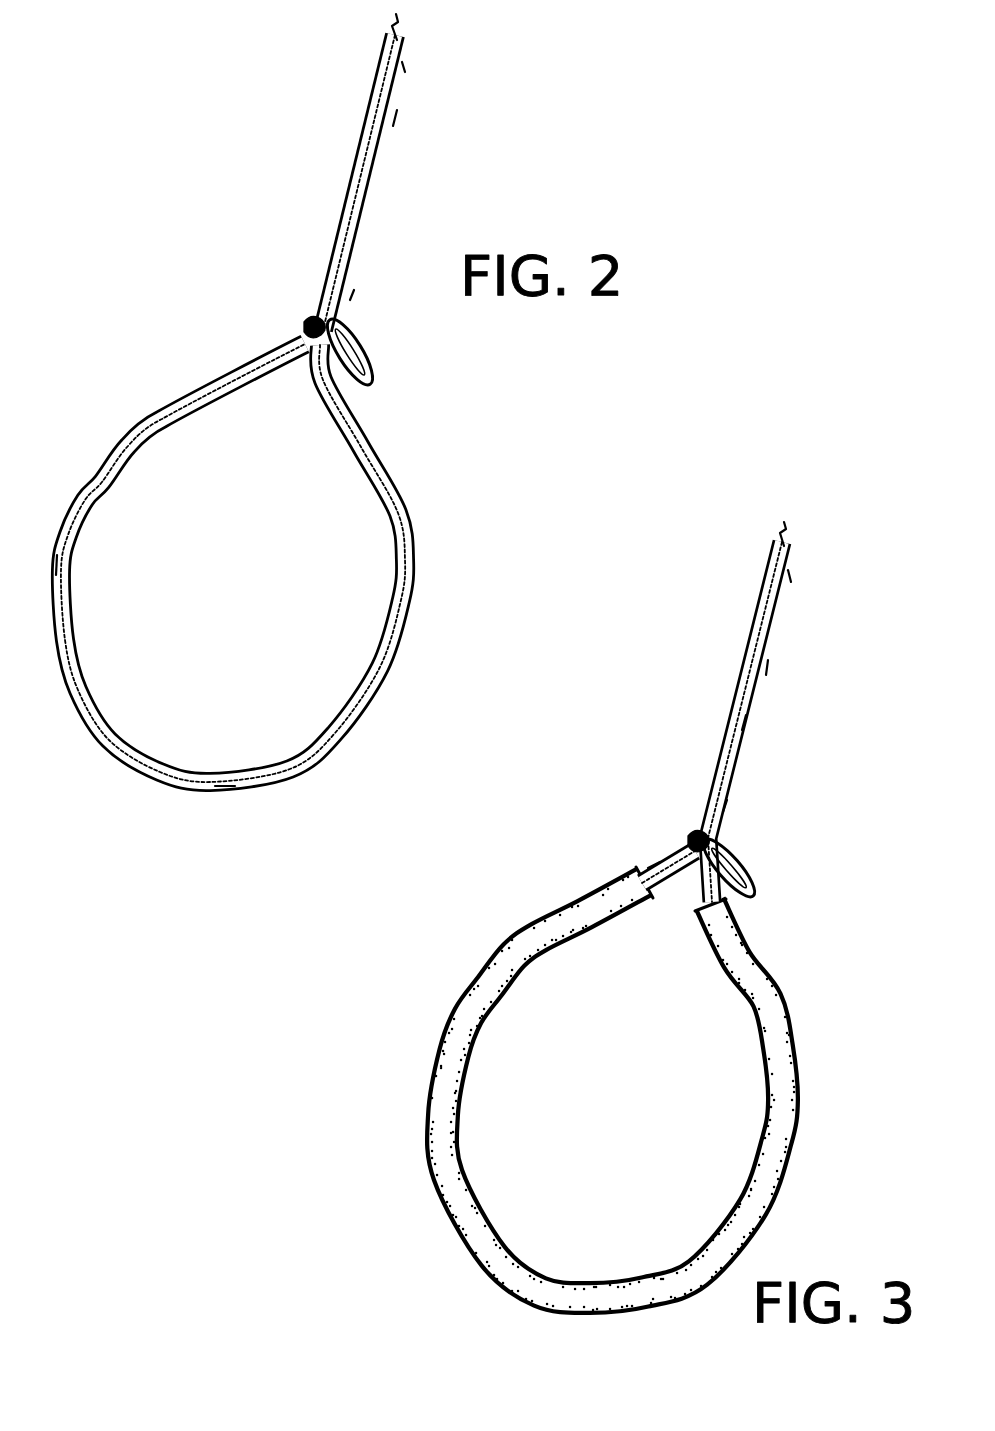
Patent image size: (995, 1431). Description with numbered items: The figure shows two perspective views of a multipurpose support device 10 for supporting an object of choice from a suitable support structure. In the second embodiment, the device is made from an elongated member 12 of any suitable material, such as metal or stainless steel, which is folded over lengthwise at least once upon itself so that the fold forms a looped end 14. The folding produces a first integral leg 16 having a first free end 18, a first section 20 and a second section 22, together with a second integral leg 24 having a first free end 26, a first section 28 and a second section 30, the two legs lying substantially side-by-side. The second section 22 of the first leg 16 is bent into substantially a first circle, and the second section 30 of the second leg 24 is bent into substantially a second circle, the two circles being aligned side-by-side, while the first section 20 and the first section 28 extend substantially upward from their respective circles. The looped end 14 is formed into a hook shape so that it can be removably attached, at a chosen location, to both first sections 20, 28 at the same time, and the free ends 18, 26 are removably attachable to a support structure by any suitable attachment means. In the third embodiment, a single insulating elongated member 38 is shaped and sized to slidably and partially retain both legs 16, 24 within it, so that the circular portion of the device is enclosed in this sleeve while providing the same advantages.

In FIG. 2, the multipurpose support device 10 is at (260, 393).
In FIG. 3, the multipurpose support device 10 is at (640, 912).
In FIG. 2, the elongated member 12 is at (411, 562).
In FIG. 3, the elongated member 12 is at (744, 723).
In FIG. 2, the looped end 14 is at (374, 382).
In FIG. 3, the looped end 14 is at (775, 872).
In FIG. 2, the first integral leg 16 is at (352, 160).
In FIG. 3, the first integral leg 16 is at (753, 640).
In FIG. 2, the first free end 18 is at (388, 38).
In FIG. 3, the first free end 18 is at (774, 542).
In FIG. 2, the first section 20 is at (331, 294).
In FIG. 3, the first section 20 is at (712, 793).
In FIG. 2, the second section 22 is at (224, 772).
In FIG. 3, the second section 22 is at (652, 862).
In FIG. 2, the second integral leg 24 is at (395, 118).
In FIG. 3, the second integral leg 24 is at (768, 667).
In FIG. 2, the first free end 26 is at (403, 78).
In FIG. 3, the first free end 26 is at (792, 585).
In FIG. 2, the first section 28 is at (348, 297).
In FIG. 3, the first section 28 is at (724, 806).
In FIG. 2, the second section 30 is at (60, 560).
In FIG. 3, the second section 30 is at (664, 890).
In FIG. 3, the insulating elongated member 38 is at (581, 1288).